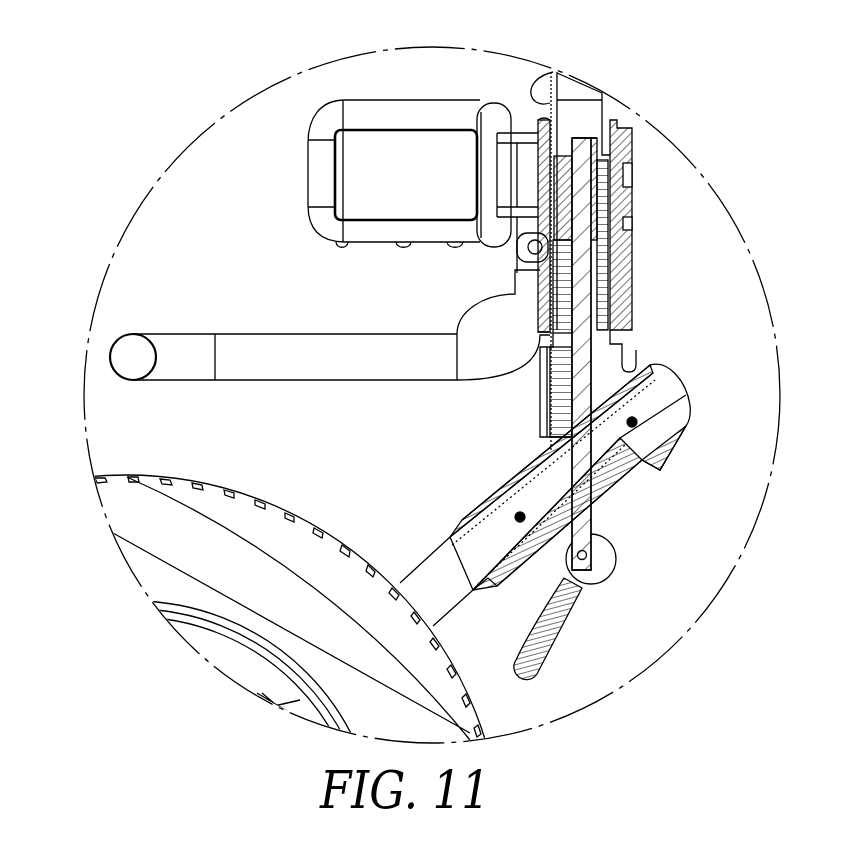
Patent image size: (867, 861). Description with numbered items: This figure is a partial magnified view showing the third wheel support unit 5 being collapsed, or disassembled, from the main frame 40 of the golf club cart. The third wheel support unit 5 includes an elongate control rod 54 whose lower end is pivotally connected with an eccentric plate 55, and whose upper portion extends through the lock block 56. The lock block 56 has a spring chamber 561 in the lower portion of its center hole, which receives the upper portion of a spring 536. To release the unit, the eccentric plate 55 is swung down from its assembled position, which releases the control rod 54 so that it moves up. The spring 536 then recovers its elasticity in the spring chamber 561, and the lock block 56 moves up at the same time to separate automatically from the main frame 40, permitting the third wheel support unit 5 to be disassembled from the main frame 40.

The main frame 40 is at (560, 70).
The third wheel support unit 5 is at (658, 146).
The lock block 56 is at (612, 105).
The spring chamber 561 is at (573, 207).
The spring 536 is at (592, 230).
The control rod 54 is at (582, 360).
The eccentric plate 55 is at (563, 620).